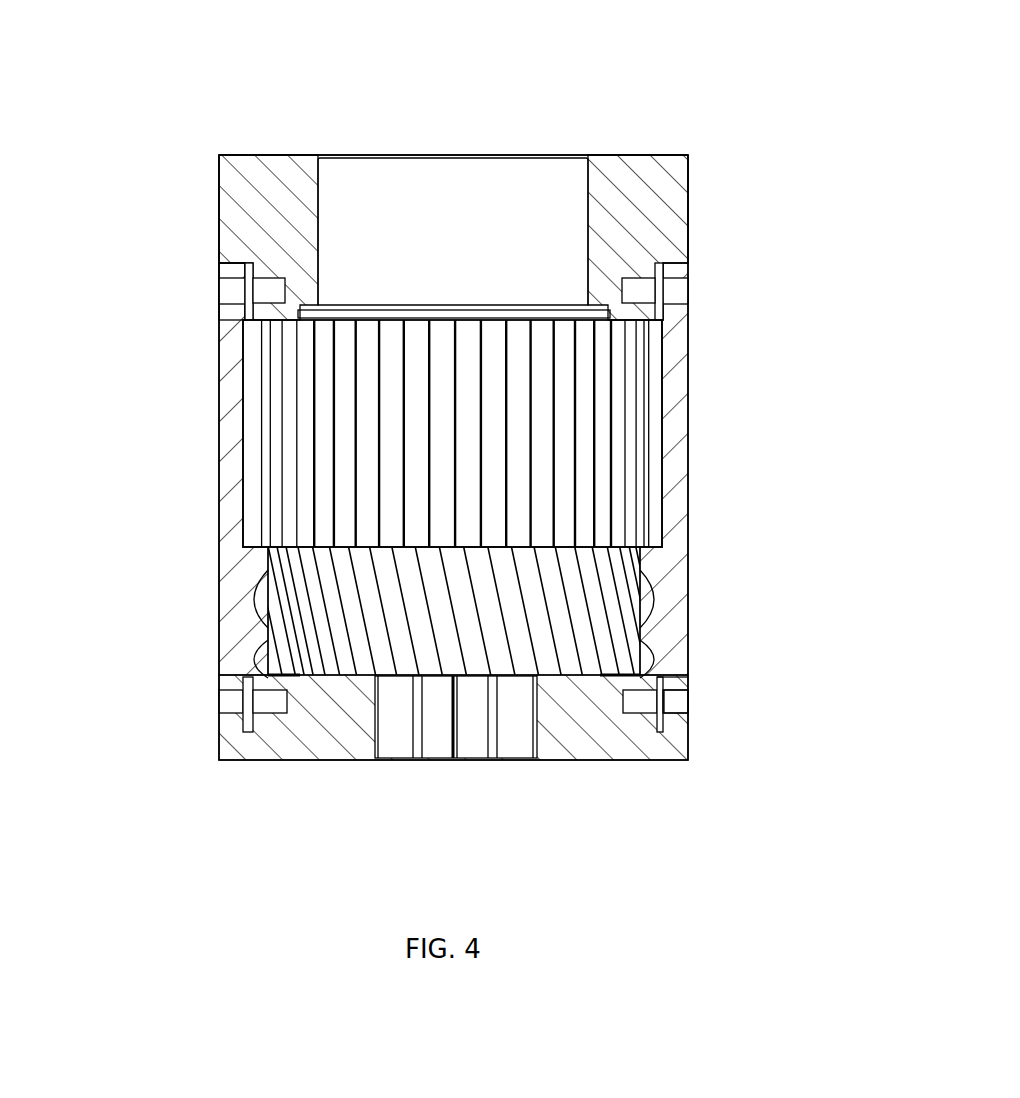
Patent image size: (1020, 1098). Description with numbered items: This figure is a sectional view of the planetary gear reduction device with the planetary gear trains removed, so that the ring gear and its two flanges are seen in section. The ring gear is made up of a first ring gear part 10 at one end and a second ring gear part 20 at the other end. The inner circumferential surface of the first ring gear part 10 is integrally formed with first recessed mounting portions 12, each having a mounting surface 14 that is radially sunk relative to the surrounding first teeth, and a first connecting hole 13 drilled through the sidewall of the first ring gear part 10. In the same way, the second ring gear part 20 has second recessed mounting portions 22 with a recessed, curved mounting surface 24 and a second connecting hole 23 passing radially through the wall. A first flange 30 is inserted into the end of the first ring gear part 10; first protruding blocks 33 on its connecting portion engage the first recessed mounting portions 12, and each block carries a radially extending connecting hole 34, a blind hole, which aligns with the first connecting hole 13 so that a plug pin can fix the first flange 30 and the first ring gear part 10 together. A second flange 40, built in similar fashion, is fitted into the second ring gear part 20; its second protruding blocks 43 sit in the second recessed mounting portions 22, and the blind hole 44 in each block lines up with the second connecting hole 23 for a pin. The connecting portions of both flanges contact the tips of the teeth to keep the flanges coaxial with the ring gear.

The first ring gear part 10 is at (233, 663).
The first recessed mounting portion 12 is at (668, 681).
The first connecting hole 13 is at (683, 703).
The mounting surface 14 is at (245, 718).
The second ring gear part 20 is at (228, 375).
The second recessed mounting portion 22 is at (243, 308).
The second connecting hole 23 is at (228, 293).
The mounting surface 24 is at (668, 277).
The first flange 30 is at (567, 761).
The first protruding block 33 is at (668, 735).
The connecting hole 34 is at (640, 705).
The second flange 40 is at (642, 150).
The second protruding block 43 is at (247, 265).
The blind hole 44 is at (273, 292).